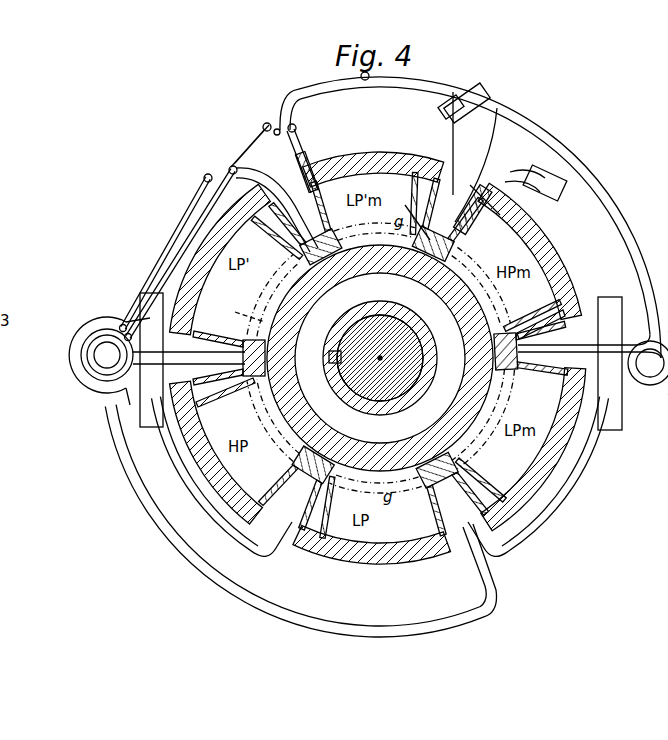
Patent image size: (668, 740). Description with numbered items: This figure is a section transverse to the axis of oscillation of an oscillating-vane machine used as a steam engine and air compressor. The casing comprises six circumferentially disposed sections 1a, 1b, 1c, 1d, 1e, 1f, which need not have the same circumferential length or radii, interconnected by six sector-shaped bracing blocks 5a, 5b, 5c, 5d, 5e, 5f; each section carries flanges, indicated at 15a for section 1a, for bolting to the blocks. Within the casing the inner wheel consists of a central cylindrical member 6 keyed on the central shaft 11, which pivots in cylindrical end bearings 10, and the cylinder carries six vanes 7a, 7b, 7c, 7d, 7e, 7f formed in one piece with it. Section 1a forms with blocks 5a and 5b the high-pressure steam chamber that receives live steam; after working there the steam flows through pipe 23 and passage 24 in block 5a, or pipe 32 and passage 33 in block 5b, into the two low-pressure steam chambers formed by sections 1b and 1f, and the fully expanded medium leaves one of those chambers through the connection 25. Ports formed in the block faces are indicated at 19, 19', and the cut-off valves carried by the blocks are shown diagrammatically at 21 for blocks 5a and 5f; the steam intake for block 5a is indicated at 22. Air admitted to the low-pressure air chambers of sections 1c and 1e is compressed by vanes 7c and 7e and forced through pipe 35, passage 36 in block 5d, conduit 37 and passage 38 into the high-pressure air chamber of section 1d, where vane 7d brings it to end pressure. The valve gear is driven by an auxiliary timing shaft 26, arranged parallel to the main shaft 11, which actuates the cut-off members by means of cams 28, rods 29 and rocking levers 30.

The casing section 1a is at (540, 252).
The casing section 1b is at (560, 460).
The casing section 1c is at (370, 562).
The casing section 1d is at (200, 463).
The casing section 1e is at (210, 272).
The casing section 1f is at (362, 168).
The bracing block 5a is at (456, 240).
The bracing block 5b is at (520, 362).
The bracing block 5c is at (445, 510).
The bracing block 5d is at (280, 468).
The bracing block 5e is at (240, 352).
The bracing block 5f is at (330, 270).
The central cylindrical member 6 is at (386, 262).
The vane 7a is at (560, 300).
The vane 7b is at (480, 470).
The vane 7c is at (318, 512).
The vane 7d is at (250, 385).
The vane 7e is at (285, 240).
The vane 7f is at (432, 210).
The cylindrical end bearing 10 is at (395, 308).
The central shaft 11 is at (425, 358).
The flange 15a is at (550, 314).
The port 19 is at (488, 213).
The port 19' is at (589, 352).
The cut-off member or valve 21 is at (262, 130).
The steam or gas intake 22 is at (520, 170).
The pipe 23 is at (596, 238).
The passage 24 is at (408, 208).
The connection 25 is at (478, 95).
The auxiliary timing shaft 26 is at (96, 360).
The cam 28 is at (100, 340).
The rod 29 is at (170, 262).
The rocking lever 30 is at (282, 122).
The pipe 32 is at (600, 182).
The passage 33 is at (515, 385).
The pipe 35 is at (400, 628).
The passage 36 is at (346, 400).
The conduit 37 is at (252, 548).
The passage 38 is at (248, 316).